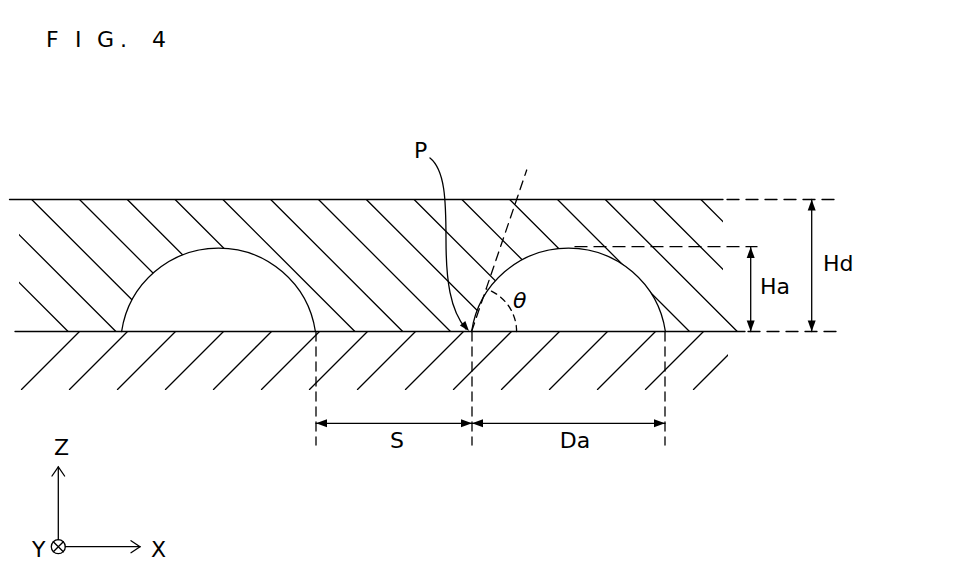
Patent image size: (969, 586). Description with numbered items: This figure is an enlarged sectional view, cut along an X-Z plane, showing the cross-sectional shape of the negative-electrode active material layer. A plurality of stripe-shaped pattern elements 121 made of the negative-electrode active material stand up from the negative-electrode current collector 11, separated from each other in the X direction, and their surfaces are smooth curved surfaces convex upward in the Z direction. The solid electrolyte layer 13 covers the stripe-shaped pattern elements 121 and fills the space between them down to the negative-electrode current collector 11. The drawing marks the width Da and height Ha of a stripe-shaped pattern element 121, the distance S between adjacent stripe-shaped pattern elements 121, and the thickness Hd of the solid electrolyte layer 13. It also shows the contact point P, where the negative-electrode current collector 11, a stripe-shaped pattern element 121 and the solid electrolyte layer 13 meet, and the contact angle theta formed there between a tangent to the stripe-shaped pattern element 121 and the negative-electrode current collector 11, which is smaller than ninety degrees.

The solid electrolyte layer 13 is at (157, 197).
The stripe-shaped pattern element 121 is at (242, 265).
The negative-electrode current collector 11 is at (410, 381).